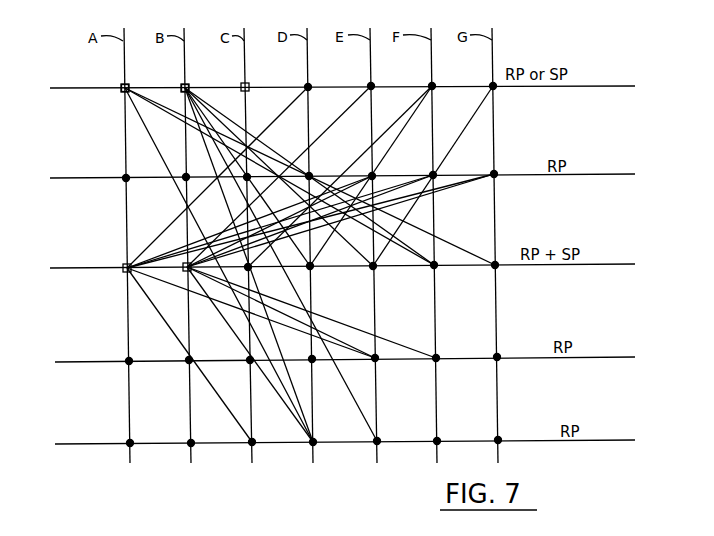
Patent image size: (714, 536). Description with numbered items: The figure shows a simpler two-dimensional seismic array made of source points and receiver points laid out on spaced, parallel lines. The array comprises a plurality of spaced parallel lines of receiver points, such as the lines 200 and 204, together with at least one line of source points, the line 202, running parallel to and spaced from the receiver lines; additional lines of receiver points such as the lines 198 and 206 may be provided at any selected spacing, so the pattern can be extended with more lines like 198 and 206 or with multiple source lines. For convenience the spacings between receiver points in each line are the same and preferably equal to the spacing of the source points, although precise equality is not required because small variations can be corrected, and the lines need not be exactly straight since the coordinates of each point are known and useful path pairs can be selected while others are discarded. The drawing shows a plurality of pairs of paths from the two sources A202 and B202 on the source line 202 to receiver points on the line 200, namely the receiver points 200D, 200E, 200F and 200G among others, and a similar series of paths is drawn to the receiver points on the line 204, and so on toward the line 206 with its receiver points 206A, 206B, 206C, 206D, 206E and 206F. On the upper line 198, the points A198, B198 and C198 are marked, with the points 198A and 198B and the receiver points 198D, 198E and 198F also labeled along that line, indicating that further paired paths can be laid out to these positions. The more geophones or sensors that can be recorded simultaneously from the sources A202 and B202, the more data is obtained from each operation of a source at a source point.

The line of RPs 198 is at (62, 88).
The line of RPs 200 is at (62, 178).
The line of SPs 202 is at (65, 268).
The line of RPs 204 is at (65, 361).
The line of RPs 206 is at (65, 444).
The crosspoint switch A198 is at (128, 86).
The crosspoint switch B198 is at (188, 86).
The crosspoint switch C198 is at (248, 85).
The crosspoint 198A is at (122, 93).
The crosspoint 198B is at (184, 90).
The crosspoint 198D is at (309, 86).
The crosspoint 198E is at (372, 86).
The crosspoint 198F is at (434, 85).
The RP 200D is at (312, 268).
The RP 200E is at (376, 174).
The RP 200F is at (433, 177).
The RP 200G is at (495, 176).
The source A202 is at (123, 272).
The source B202 is at (184, 271).
The crosspoint 206A is at (129, 441).
The crosspoint 206B is at (190, 441).
The crosspoint 206C is at (251, 444).
The crosspoint 206D is at (312, 444).
The crosspoint 206E is at (376, 443).
The crosspoint 206F is at (436, 439).